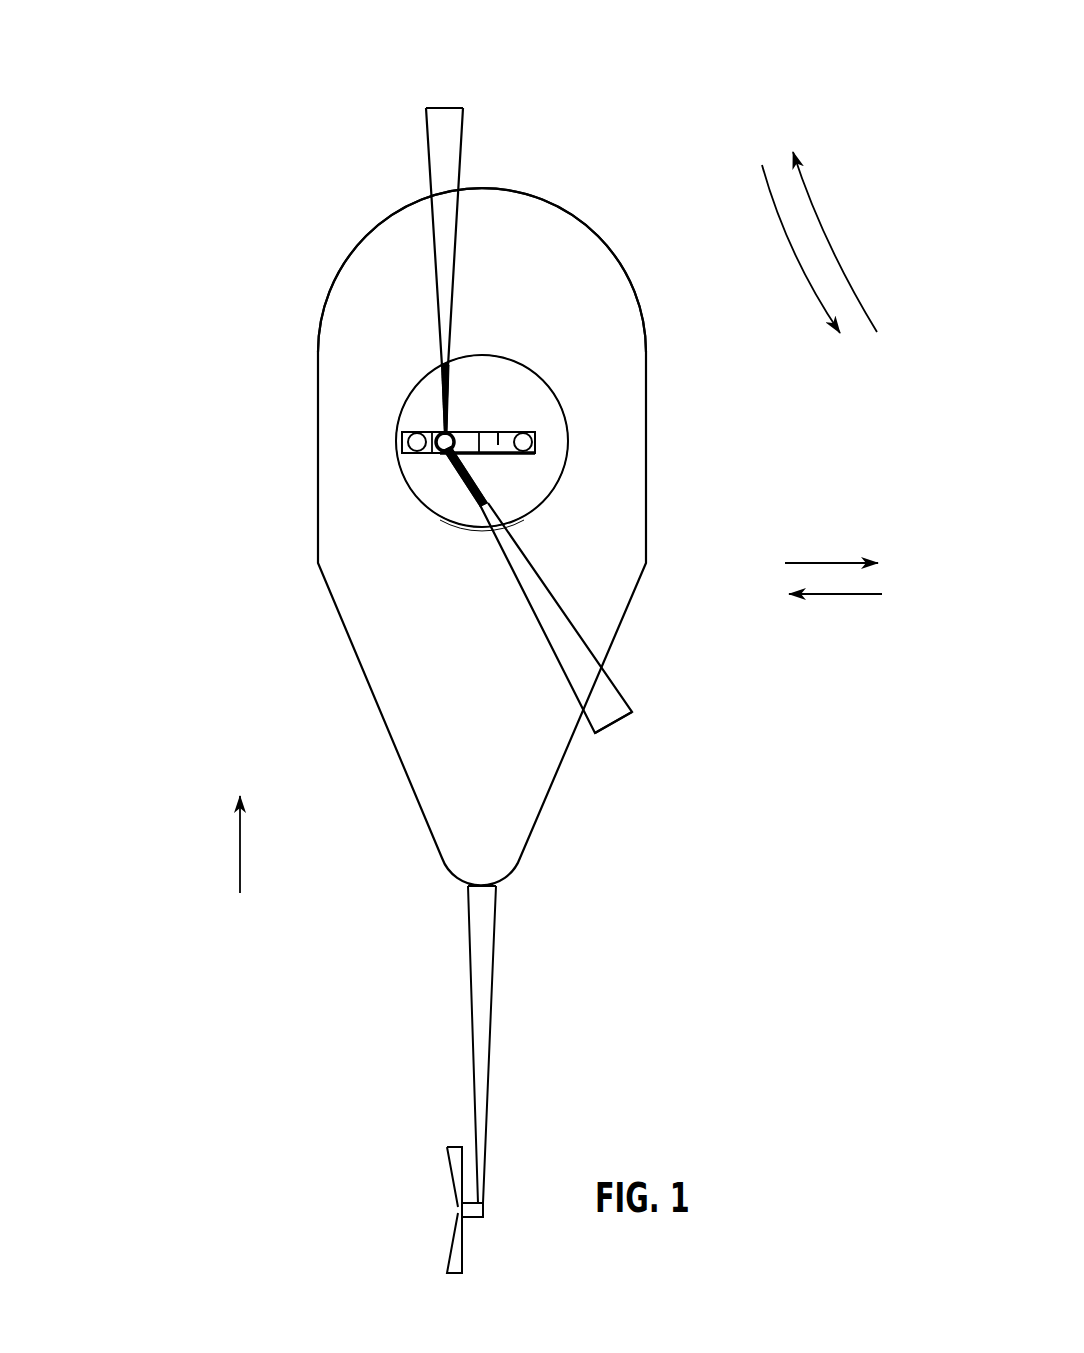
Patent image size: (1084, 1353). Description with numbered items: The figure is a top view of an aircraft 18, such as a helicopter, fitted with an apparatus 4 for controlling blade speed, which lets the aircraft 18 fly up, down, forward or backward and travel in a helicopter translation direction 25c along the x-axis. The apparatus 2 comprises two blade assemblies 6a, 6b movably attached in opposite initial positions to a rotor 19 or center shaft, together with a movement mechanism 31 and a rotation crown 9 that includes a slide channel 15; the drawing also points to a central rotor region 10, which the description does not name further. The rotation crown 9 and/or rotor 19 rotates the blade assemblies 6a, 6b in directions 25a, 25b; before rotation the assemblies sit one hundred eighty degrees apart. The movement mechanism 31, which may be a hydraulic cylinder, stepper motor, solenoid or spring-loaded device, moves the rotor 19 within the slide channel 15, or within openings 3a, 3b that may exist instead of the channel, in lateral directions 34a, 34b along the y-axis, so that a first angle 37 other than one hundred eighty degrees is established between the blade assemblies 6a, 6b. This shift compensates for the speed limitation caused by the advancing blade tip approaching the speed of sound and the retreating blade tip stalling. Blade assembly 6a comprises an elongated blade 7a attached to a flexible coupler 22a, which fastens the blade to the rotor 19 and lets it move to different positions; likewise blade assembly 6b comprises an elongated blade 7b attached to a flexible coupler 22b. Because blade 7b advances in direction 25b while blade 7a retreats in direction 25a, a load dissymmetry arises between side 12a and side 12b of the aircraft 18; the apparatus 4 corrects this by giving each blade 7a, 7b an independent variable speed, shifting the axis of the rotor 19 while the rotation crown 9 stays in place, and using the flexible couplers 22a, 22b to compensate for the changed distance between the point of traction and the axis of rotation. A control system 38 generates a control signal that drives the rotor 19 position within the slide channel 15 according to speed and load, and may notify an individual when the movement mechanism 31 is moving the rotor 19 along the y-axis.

The apparatus 2 is at (410, 805).
The apparatus for controlling a blade speed 4 is at (357, 385).
The aircraft 18 is at (583, 215).
The rotation crown 9 is at (520, 493).
The hub 10 is at (496, 309).
The slide channel 15 is at (512, 457).
The opening 3a is at (410, 442).
The rotor 19 is at (440, 456).
The opening 3b is at (527, 432).
The movement mechanism 31 is at (498, 445).
The first angle 37 is at (476, 408).
The blade assembly 6a is at (474, 153).
The elongated blade 7a is at (450, 103).
The flexible coupler 22a is at (434, 371).
The blade assembly 6b is at (630, 685).
The elongated blade 7b is at (621, 731).
The flexible coupler 22b is at (457, 483).
The control system 38 is at (460, 530).
The side of aircraft 12b is at (212, 312).
The side of aircraft 12a is at (728, 456).
The lateral direction 34a is at (836, 560).
The lateral direction 34b is at (832, 597).
The direction 25a is at (826, 198).
The direction 25b is at (798, 218).
The helicopter translation direction 25c is at (237, 852).